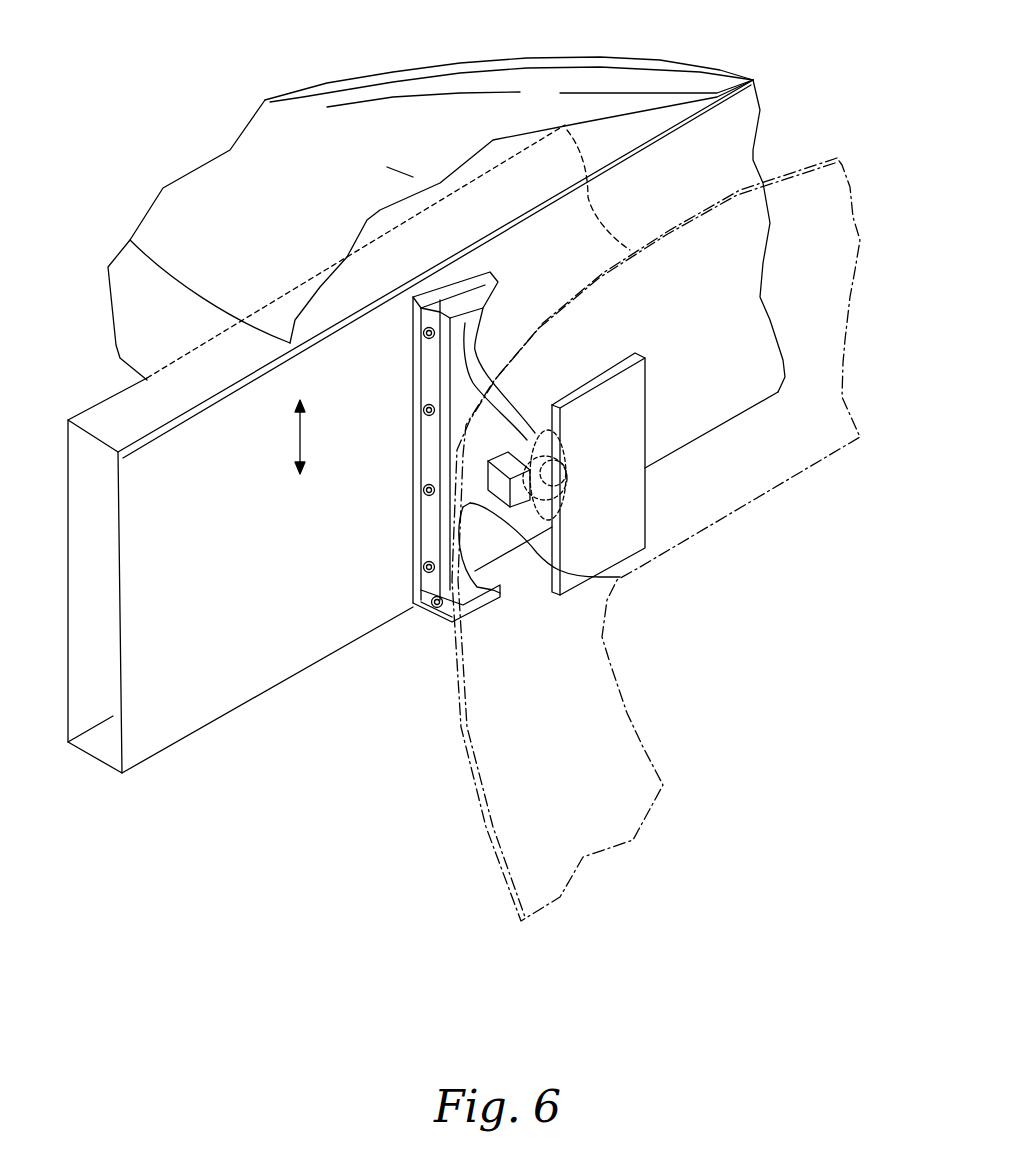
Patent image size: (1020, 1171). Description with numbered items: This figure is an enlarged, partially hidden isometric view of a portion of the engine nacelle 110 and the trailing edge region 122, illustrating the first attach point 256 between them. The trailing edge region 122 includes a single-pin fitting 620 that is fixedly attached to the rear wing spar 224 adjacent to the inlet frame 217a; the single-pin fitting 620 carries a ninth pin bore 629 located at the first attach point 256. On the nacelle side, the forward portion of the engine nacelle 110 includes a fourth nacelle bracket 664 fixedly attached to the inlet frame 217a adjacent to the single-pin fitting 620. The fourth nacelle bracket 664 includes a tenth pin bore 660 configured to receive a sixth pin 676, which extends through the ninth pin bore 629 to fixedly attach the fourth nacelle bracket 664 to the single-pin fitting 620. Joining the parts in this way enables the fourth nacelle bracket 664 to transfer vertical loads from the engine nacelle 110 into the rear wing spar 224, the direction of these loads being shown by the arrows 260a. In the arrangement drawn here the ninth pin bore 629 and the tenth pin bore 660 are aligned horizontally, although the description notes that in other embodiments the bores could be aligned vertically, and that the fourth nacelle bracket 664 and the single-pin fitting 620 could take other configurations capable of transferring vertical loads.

The engine nacelle 110 is at (806, 128).
The trailing edge region 122 is at (155, 330).
The inlet frame 217a is at (562, 126).
The rear wing spar 224 is at (233, 687).
The arrows 260a is at (450, 490).
The first attach point 256 is at (490, 500).
The single-pin fitting 620 is at (463, 327).
The ninth pin bore 629 is at (550, 428).
The tenth pin bore 660 is at (570, 503).
The fourth nacelle bracket 664 is at (617, 578).
The sixth pin 676 is at (503, 481).